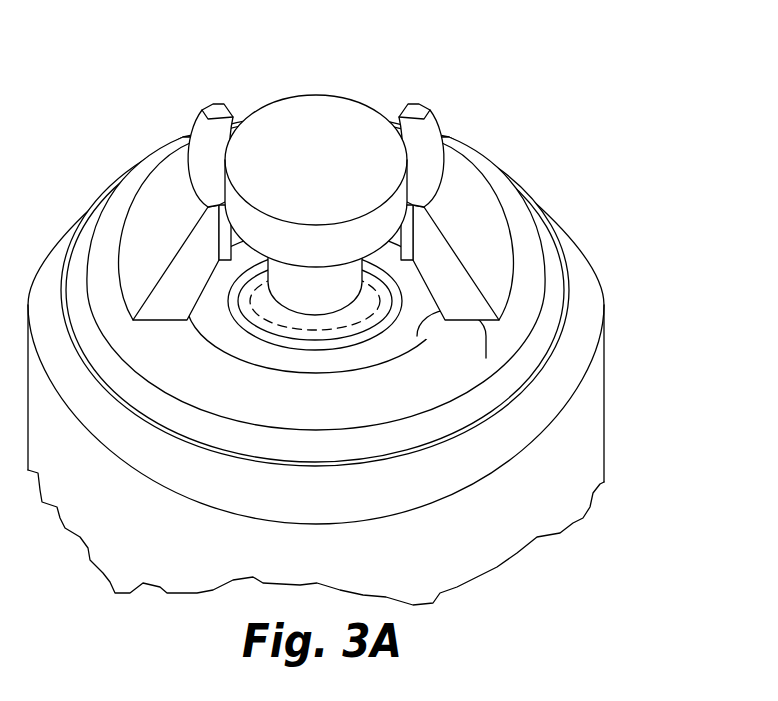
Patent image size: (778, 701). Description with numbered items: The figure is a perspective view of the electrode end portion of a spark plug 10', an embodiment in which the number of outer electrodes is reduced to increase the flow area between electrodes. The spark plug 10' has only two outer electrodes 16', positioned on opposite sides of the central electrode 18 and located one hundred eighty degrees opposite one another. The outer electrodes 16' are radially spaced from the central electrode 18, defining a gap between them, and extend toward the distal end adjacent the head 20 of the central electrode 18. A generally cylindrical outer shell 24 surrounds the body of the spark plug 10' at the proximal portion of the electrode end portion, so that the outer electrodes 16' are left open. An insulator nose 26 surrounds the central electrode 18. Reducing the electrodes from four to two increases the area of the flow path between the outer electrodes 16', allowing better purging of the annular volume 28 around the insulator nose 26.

The spark plug 10' is at (316, 306).
The outer electrodes 16' is at (301, 197).
The central electrode 18 is at (283, 292).
The head 20 is at (315, 127).
The outer shell 24 is at (582, 402).
The insulator nose 26 is at (358, 328).
The annular volume 28 is at (486, 340).